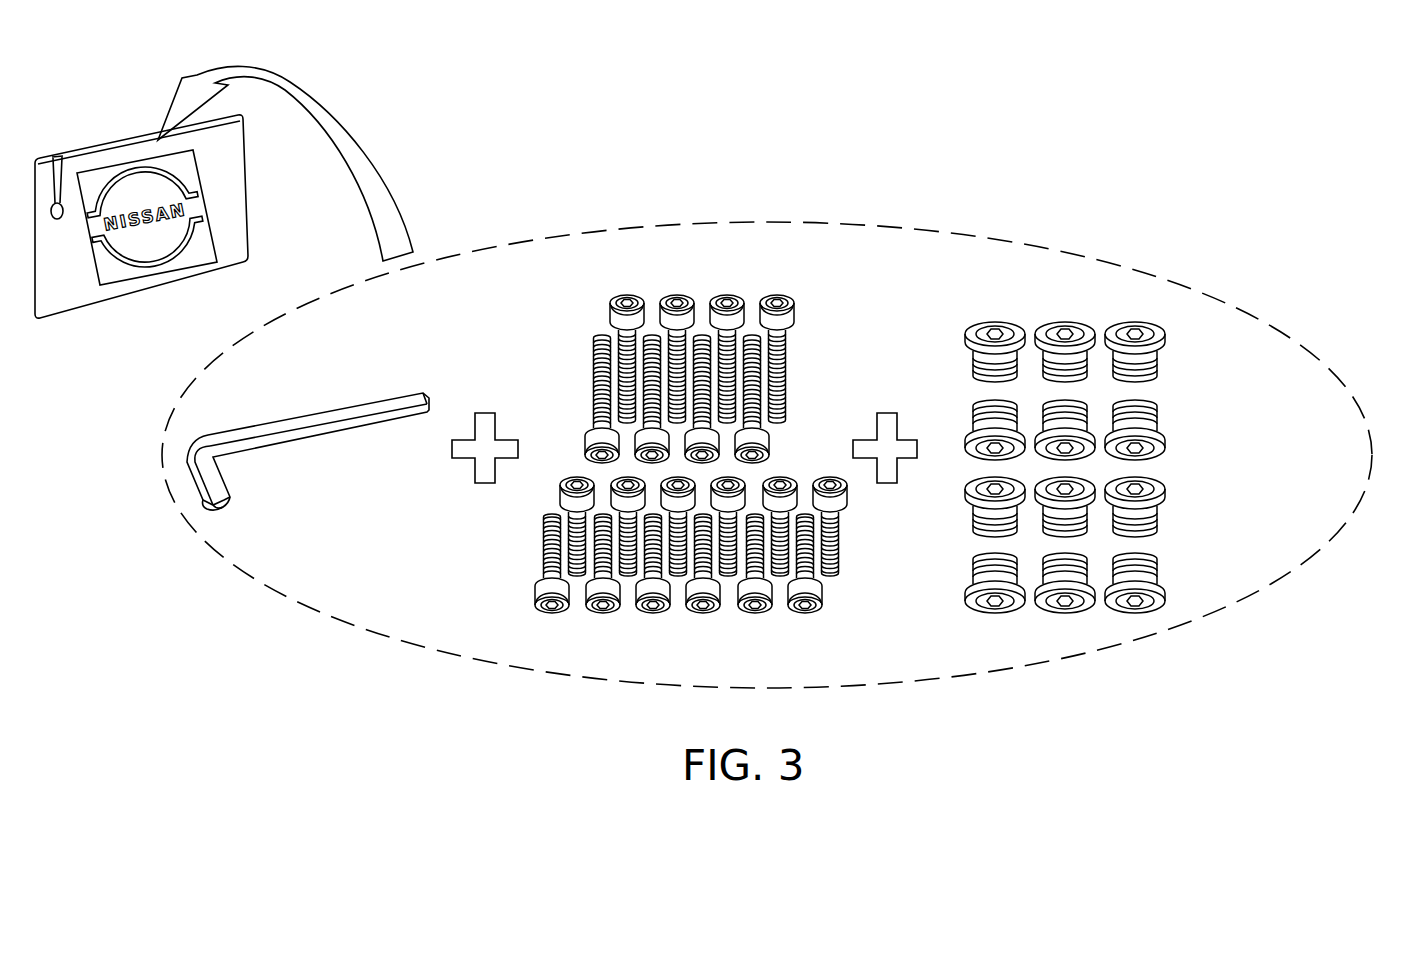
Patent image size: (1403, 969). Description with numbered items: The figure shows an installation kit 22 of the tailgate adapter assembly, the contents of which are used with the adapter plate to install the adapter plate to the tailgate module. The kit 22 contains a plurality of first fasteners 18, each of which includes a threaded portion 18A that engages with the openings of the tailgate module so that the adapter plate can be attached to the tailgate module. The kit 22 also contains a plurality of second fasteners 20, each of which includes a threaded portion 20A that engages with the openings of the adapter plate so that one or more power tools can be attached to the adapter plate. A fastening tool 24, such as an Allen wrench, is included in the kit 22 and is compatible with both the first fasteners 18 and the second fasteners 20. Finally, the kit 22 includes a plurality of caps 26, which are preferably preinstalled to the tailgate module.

The first fasteners 18 is at (686, 356).
The threaded portions 18A is at (593, 366).
The second fasteners 20 is at (689, 571).
The threaded portions 20A is at (543, 545).
The installation kit 22 is at (1148, 148).
The fastening tool 24 is at (312, 407).
The caps 26 is at (1193, 318).